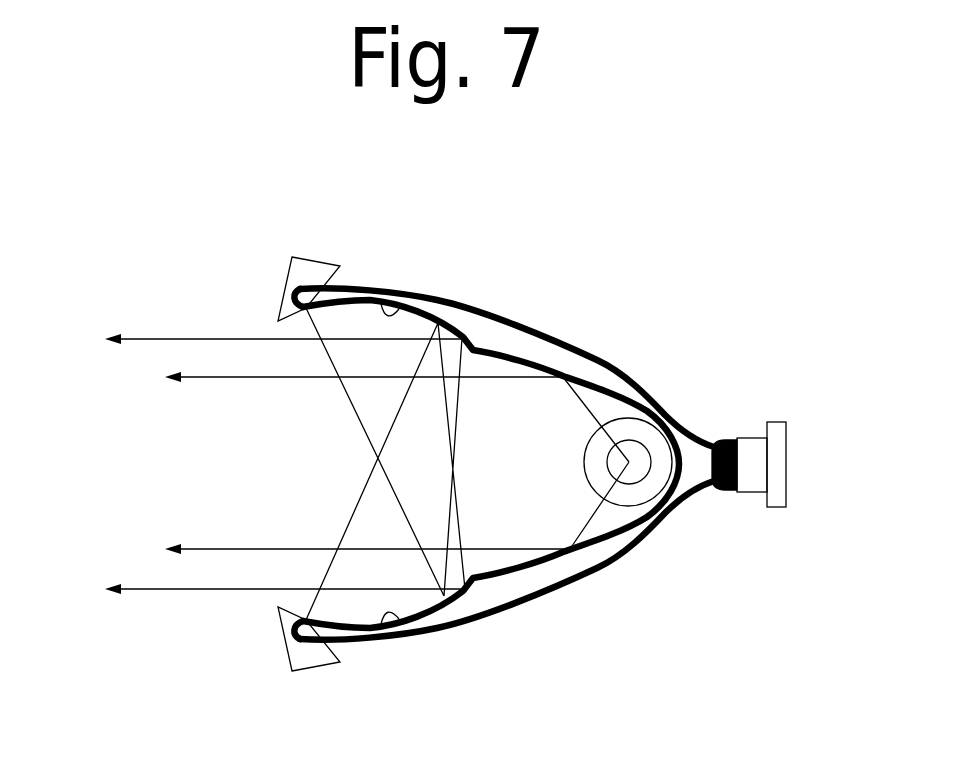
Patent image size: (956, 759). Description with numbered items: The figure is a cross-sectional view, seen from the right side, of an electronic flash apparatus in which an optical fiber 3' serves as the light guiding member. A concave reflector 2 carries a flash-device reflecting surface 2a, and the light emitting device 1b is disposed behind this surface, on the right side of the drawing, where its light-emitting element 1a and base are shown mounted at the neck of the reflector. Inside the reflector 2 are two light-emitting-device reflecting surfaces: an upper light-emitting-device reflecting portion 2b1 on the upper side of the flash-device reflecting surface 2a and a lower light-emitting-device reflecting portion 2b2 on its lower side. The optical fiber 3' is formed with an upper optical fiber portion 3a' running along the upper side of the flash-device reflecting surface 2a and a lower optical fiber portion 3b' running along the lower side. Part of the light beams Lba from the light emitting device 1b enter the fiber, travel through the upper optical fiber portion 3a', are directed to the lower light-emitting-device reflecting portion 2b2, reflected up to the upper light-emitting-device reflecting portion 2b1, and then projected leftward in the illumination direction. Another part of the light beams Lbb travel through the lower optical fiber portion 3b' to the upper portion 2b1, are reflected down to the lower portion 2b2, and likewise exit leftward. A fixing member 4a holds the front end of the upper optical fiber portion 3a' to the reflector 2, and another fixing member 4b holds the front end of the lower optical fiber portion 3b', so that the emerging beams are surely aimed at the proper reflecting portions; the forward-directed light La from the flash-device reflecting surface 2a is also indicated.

The light source (lamp filament/arc) 1a is at (629, 462).
The light emitting device 1b is at (740, 465).
The concave reflector 2 is at (497, 385).
The flash-device reflecting surface 2a is at (541, 367).
The upper light-emitting-device reflecting portion 2b1 is at (398, 308).
The lower light-emitting-device reflecting portion 2b2 is at (398, 620).
The optical fiber 3' is at (470, 466).
The upper optical fiber portion 3a' is at (504, 352).
The lower optical fiber portion 3b' is at (504, 582).
The fixing member 4a is at (312, 275).
The fixing member 4b is at (315, 658).
The light beam from main reflecting surface La is at (397, 463).
The light beams Lba is at (274, 317).
The light beams Lbb is at (278, 616).